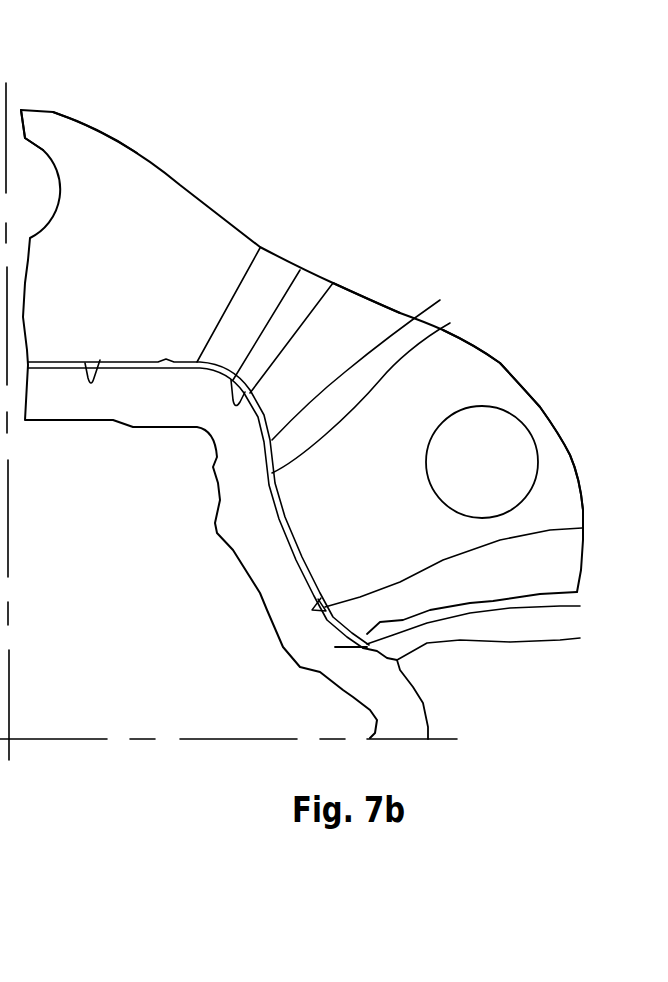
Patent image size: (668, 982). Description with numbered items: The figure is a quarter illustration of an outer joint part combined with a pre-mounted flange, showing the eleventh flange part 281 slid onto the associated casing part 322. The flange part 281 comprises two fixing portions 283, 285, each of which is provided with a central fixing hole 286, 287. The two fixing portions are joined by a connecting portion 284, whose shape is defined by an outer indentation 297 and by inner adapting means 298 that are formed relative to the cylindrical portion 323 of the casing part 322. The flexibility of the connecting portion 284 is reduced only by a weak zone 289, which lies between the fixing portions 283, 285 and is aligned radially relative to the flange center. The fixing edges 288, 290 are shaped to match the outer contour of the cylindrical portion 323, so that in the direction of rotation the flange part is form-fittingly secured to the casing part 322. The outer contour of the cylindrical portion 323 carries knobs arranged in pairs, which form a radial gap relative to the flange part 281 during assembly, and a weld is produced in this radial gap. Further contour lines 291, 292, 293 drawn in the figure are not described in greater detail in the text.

The eleventh flange part 281 is at (427, 282).
The fixing portion 283 is at (480, 377).
The connecting portion 284 is at (360, 293).
The fixing portion 285 is at (90, 148).
The central fixing hole 286 is at (507, 437).
The central fixing hole 287 is at (35, 168).
The fixing edge 288 is at (582, 528).
The weak zone 289 is at (283, 273).
The fixing edge 290 is at (100, 360).
The lower wall line 291 is at (580, 637).
The curved rib line 292 is at (440, 300).
The second curved rib line 293 is at (450, 323).
The outer indentation 297 is at (262, 251).
The inner adapting means 298 is at (345, 310).
The casing part 322 is at (433, 700).
The cylindrical portion 323 is at (580, 607).